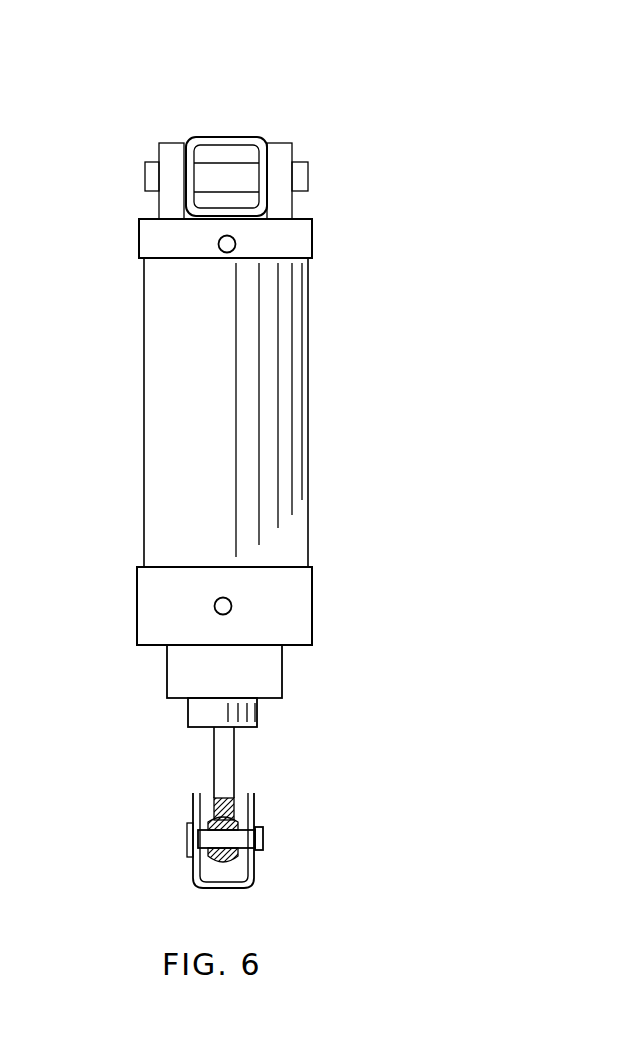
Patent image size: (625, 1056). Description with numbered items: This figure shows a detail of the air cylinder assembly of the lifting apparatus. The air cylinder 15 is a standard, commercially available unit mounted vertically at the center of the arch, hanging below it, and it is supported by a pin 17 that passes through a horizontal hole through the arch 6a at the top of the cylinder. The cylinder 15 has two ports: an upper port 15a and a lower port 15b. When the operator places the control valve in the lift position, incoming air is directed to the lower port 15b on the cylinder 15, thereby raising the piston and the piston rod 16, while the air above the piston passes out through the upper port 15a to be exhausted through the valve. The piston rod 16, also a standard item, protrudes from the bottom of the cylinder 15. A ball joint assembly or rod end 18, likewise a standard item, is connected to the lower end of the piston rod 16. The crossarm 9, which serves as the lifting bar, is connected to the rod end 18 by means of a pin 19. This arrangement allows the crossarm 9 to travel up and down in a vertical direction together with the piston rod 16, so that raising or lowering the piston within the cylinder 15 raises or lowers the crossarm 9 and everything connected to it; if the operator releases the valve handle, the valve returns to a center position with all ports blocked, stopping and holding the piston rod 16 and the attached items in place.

The horizontal hole through the arch 6a is at (228, 138).
The pin 17 is at (308, 170).
The air cylinder 15 is at (306, 442).
The port 15a is at (236, 248).
The port 15b is at (232, 601).
The piston rod 16 is at (167, 667).
The ball joint assembly or rod end 18 is at (235, 758).
The crossarm 9 is at (193, 870).
The pin 19 is at (262, 834).